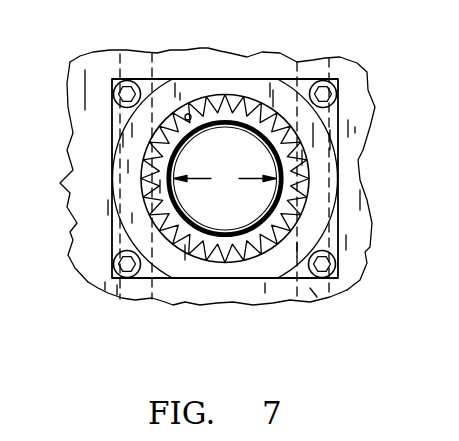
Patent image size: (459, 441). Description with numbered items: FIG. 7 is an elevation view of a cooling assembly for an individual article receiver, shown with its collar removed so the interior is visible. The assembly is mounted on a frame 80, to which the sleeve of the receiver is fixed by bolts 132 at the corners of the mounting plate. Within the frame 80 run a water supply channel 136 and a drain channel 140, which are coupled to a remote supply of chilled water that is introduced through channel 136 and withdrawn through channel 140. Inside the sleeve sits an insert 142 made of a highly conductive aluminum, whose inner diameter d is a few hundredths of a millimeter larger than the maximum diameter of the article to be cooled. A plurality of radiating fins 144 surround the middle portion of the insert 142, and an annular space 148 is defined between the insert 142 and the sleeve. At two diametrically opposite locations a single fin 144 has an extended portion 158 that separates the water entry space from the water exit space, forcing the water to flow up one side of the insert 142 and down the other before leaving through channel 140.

The frame 80 is at (360, 87).
The bolts 132 is at (113, 90).
The water supply channel 136 is at (145, 290).
The channel 140 is at (322, 308).
The insert 142 is at (240, 263).
The radiating fins 144 is at (235, 100).
The annular space 148 is at (195, 248).
The extended portion 158 is at (189, 114).